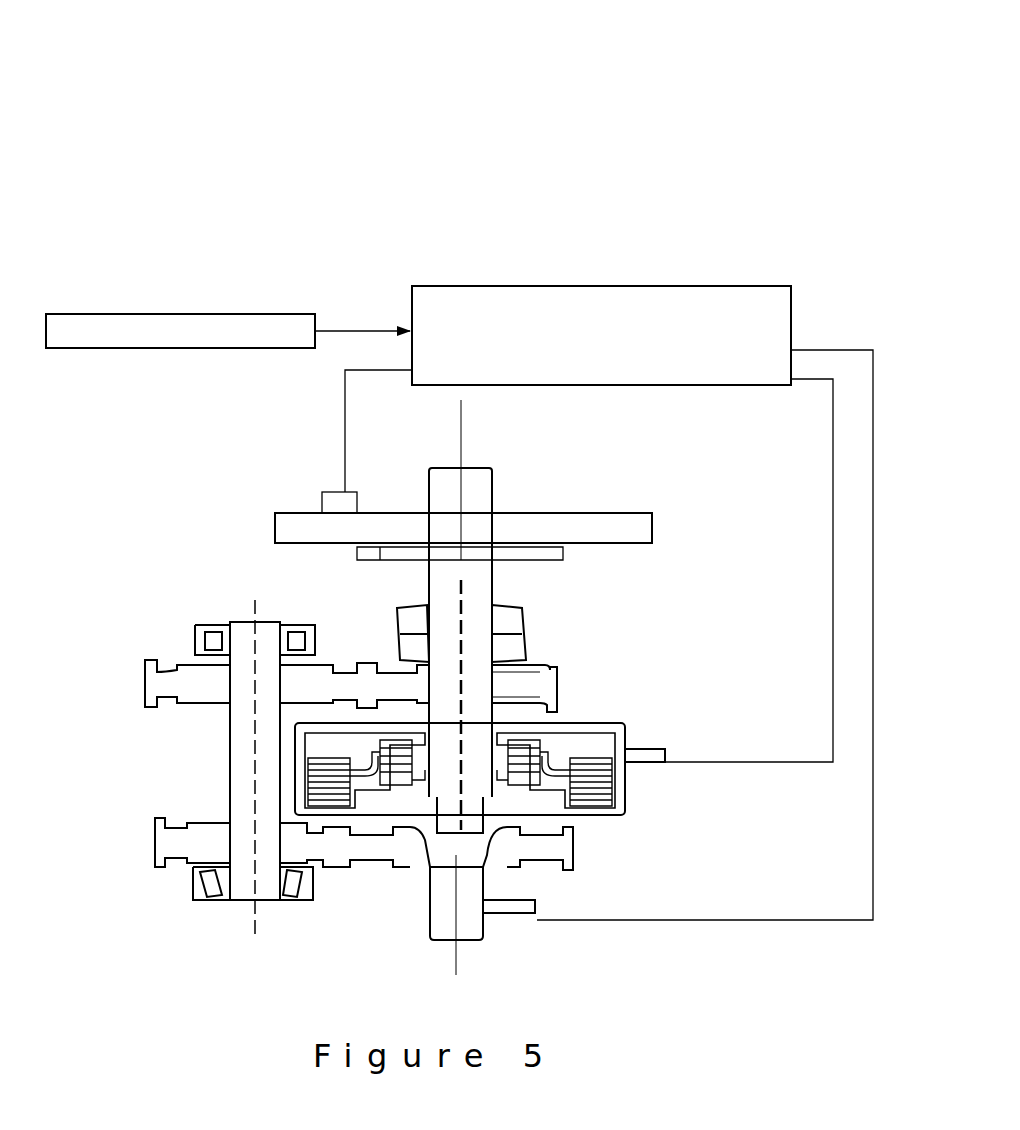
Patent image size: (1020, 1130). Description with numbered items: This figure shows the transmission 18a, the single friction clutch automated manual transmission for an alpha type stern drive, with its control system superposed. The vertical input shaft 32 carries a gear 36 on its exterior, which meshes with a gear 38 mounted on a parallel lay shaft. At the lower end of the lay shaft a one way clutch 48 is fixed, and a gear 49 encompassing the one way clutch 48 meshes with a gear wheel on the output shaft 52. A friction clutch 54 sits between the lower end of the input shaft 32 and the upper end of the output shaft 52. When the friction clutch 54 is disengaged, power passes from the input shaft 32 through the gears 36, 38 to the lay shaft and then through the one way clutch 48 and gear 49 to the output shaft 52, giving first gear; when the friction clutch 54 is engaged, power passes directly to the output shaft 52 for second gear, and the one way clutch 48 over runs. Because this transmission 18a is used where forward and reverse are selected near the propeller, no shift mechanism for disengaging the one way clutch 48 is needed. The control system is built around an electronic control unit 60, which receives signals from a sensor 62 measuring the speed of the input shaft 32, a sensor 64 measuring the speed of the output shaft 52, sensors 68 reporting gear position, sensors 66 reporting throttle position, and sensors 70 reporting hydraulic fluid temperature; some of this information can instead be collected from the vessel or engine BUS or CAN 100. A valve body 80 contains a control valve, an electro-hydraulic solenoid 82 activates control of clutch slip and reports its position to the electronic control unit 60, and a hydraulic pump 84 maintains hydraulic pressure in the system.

The transmission 18a is at (502, 133).
The BUS or CAN 100 is at (172, 311).
The sensors 68 is at (487, 284).
The sensors 66 is at (718, 284).
The electronic control unit 60 is at (601, 335).
The sensors 70 is at (793, 310).
The electro-hydraulic solenoid 82 is at (330, 490).
The input shaft 32 is at (483, 464).
The valve body 80 is at (272, 522).
The hydraulic pump 84 is at (352, 553).
The gear 36 is at (560, 682).
The sensor 62 is at (652, 745).
The gear 38 is at (140, 686).
The gear 49 is at (153, 838).
The one way clutch 48 is at (192, 870).
The friction clutch 54 is at (612, 796).
The output shaft 52 is at (453, 922).
The sensor 64 is at (516, 917).